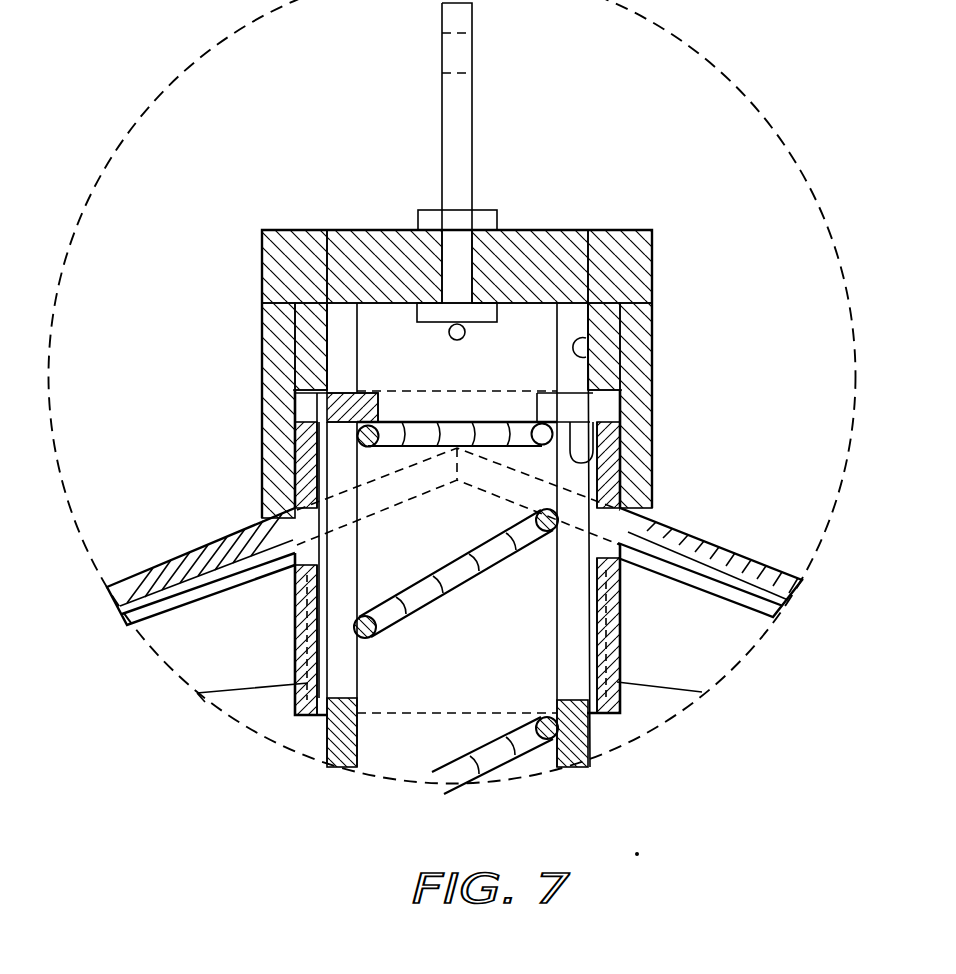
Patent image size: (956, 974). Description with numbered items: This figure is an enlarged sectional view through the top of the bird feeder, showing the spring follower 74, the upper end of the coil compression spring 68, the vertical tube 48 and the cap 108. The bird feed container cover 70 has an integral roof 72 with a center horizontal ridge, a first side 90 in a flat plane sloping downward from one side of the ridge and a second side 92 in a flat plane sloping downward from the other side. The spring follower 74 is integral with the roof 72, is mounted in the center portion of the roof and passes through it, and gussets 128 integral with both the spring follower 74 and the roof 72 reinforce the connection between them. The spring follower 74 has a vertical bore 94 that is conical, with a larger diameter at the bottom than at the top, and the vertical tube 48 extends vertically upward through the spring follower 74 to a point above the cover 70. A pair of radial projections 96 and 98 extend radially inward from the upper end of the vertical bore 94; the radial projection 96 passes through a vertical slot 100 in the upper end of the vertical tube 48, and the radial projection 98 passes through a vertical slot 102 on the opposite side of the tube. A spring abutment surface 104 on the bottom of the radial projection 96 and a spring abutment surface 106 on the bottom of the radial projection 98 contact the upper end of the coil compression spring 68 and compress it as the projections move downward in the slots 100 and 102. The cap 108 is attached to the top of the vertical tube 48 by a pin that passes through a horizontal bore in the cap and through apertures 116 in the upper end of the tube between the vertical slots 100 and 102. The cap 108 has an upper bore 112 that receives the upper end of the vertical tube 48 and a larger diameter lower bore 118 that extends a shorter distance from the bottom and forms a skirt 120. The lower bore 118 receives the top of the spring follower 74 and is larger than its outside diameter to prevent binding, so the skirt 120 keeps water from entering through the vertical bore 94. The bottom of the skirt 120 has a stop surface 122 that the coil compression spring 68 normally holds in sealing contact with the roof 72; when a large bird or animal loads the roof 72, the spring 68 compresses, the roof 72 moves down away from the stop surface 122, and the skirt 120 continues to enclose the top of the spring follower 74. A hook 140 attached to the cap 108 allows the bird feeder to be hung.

The hook 140 is at (442, 92).
The cap 108 is at (495, 242).
The radial projection 98 is at (330, 388).
The apertures 116 is at (450, 337).
The upper bore 112 is at (592, 357).
The radial projection 96 is at (620, 390).
The spring follower 74 is at (632, 437).
The spring abutment surface 104 is at (632, 473).
The lower bore 118 is at (623, 490).
The stop surface 122 is at (635, 515).
The roof 72 is at (655, 520).
The first side 90 is at (700, 540).
The bird feed container cover 70 is at (171, 530).
The second side 92 is at (255, 542).
The spring abutment surface 106 is at (348, 428).
The skirt 120 is at (283, 453).
The gussets 128 is at (200, 657).
The vertical slot 102 is at (338, 678).
The vertical tube 48 is at (343, 752).
The coil compression spring 68 is at (503, 757).
The vertical bore 94 is at (620, 713).
The vertical slot 100 is at (598, 718).